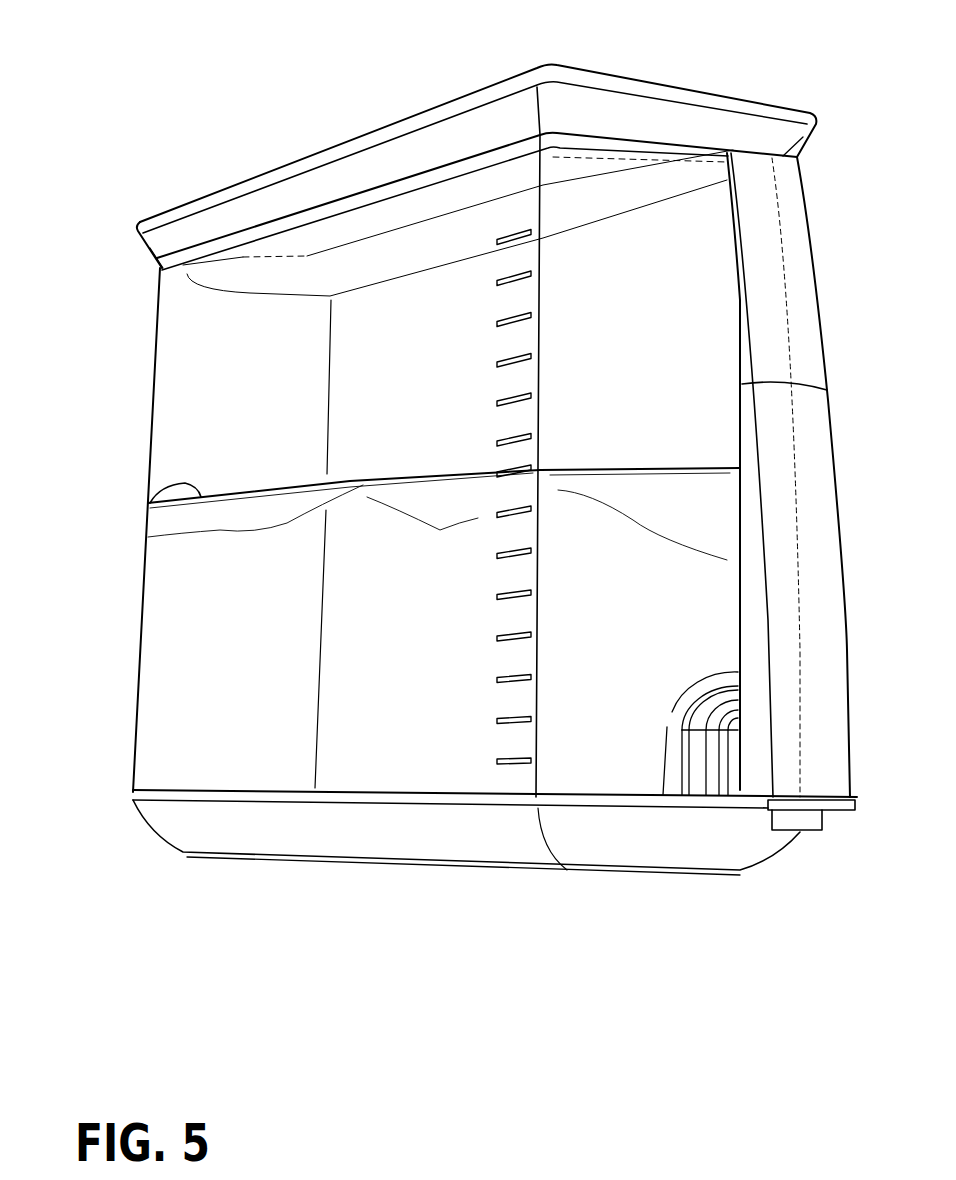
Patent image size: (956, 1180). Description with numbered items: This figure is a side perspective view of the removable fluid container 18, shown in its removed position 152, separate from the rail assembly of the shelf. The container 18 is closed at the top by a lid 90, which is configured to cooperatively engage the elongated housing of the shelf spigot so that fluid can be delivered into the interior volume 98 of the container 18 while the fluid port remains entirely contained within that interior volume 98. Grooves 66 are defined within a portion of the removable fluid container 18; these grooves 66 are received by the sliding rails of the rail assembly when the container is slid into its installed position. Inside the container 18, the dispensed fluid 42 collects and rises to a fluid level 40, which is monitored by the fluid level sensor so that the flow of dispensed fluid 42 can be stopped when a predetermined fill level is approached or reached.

The removed position 152 is at (477, 145).
The lid 90 is at (417, 118).
The interior volume 98 is at (262, 368).
The grooves 66 is at (158, 274).
The removable fluid container 18 is at (155, 362).
The fluid level 40 is at (150, 503).
The dispensed fluid 42 is at (227, 648).